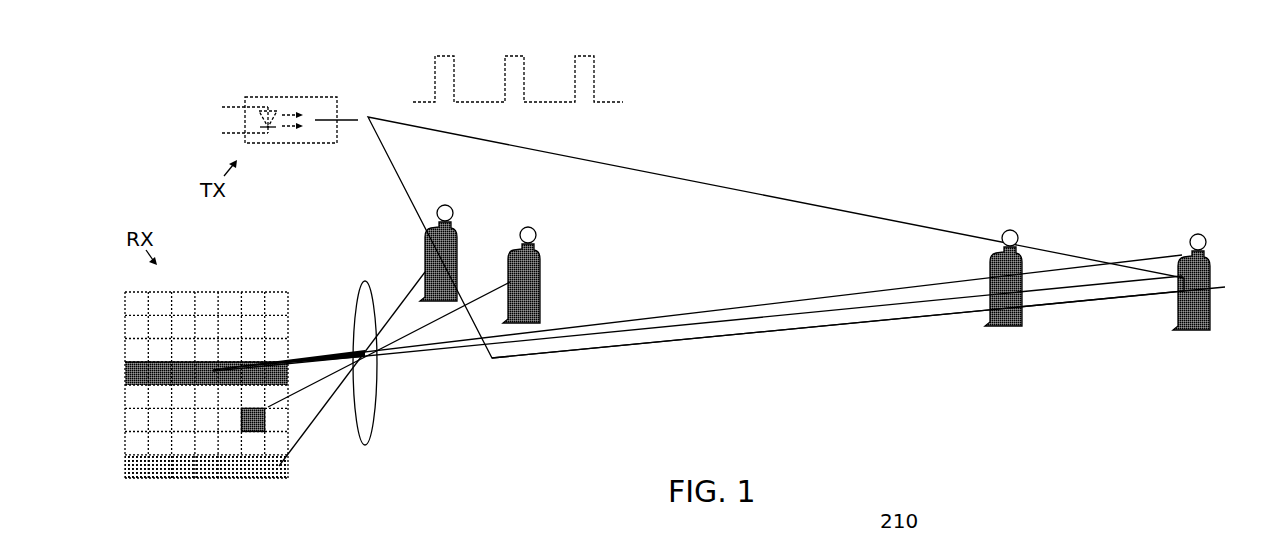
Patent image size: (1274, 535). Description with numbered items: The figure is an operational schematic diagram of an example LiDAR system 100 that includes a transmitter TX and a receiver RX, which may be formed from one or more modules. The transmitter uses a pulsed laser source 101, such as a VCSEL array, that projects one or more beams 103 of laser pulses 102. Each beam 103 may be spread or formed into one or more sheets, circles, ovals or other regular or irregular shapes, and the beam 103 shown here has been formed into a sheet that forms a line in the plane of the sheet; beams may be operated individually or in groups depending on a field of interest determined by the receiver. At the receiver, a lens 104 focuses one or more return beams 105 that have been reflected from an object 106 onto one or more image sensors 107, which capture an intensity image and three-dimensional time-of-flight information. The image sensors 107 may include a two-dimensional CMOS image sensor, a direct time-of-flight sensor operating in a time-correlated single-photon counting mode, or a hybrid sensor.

The LiDAR system 100 is at (740, 64).
The pulsed laser source 101 is at (280, 96).
The laser pulses 102 is at (426, 42).
The beam 103 is at (649, 189).
The lens 104 is at (377, 430).
The return beams 105 is at (432, 352).
The object 106 is at (455, 228).
The image sensors 107 is at (211, 479).